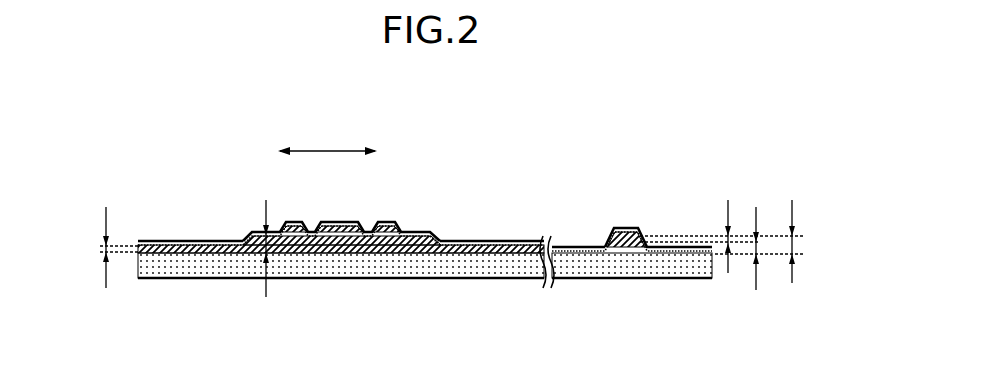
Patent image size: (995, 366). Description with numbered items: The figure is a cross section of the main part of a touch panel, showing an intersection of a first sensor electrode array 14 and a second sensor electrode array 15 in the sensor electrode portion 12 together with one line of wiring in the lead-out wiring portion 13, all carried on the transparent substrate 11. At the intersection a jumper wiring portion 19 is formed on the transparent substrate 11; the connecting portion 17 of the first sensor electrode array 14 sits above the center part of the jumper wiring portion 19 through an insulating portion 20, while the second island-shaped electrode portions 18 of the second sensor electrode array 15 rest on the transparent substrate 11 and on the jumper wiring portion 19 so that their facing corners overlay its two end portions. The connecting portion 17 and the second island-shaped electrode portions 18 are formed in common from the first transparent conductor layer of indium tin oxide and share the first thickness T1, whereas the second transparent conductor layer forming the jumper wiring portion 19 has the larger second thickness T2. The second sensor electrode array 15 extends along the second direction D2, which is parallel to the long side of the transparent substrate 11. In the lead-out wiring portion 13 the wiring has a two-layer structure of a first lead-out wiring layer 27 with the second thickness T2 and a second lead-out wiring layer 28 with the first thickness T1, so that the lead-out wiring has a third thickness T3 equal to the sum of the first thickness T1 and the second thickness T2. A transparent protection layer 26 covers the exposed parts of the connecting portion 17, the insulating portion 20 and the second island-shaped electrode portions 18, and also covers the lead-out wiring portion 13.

The transparent substrate 11 is at (182, 277).
The sensor electrode portion 12 is at (178, 229).
The lead-out wiring portion 13 is at (637, 203).
The first sensor electrode array 14 is at (364, 212).
The second sensor electrode array 15 is at (487, 234).
The connecting portion 17 is at (332, 224).
The second island-shaped electrode portion 18 is at (217, 240).
The jumper wiring portion 19 is at (393, 239).
The insulating portion 20 is at (309, 223).
The transparent protection layer 26 is at (517, 242).
The first lead-out wiring layer 27 is at (609, 247).
The second lead-out wiring layer 28 is at (627, 232).
The first thickness T1 is at (445, 229).
The second thickness T2 is at (509, 245).
The third thickness T3 is at (790, 226).
The second direction D2 is at (327, 138).